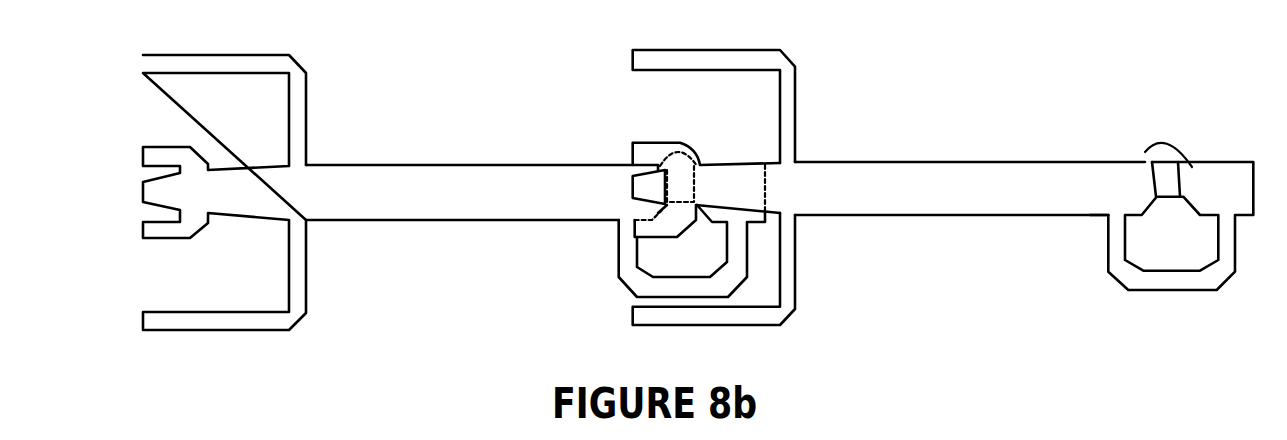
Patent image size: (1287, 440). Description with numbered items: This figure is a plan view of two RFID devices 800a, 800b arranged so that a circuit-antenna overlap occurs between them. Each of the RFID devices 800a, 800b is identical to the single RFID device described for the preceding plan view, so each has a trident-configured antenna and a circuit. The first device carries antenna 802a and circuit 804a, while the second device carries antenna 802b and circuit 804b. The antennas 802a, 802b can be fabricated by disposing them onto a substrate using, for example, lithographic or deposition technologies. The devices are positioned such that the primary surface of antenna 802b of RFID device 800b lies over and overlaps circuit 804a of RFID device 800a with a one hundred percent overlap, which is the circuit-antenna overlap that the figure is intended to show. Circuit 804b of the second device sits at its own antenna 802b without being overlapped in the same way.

The RFID device 800a is at (492, 150).
The RFID device 800b is at (1069, 146).
The antenna 802a is at (327, 221).
The antenna 802b is at (818, 216).
The circuit 804a is at (678, 187).
The circuit 804b is at (1168, 183).